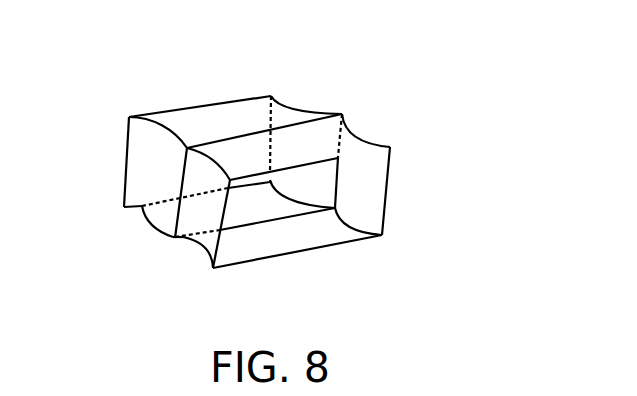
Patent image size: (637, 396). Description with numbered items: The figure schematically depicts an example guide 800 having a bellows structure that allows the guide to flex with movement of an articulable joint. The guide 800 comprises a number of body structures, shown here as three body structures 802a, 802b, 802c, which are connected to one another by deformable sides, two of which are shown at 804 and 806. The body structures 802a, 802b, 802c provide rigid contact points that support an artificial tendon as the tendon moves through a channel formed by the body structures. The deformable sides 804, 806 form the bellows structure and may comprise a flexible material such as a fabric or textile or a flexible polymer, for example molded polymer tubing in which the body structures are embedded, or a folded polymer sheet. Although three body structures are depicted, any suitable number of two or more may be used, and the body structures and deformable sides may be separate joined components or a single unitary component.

The guide 800 is at (316, 48).
The body structure 802a is at (389, 186).
The body structure 802b is at (181, 173).
The body structure 802c is at (127, 143).
The deformable side 804 is at (362, 196).
The deformable side 806 is at (222, 125).